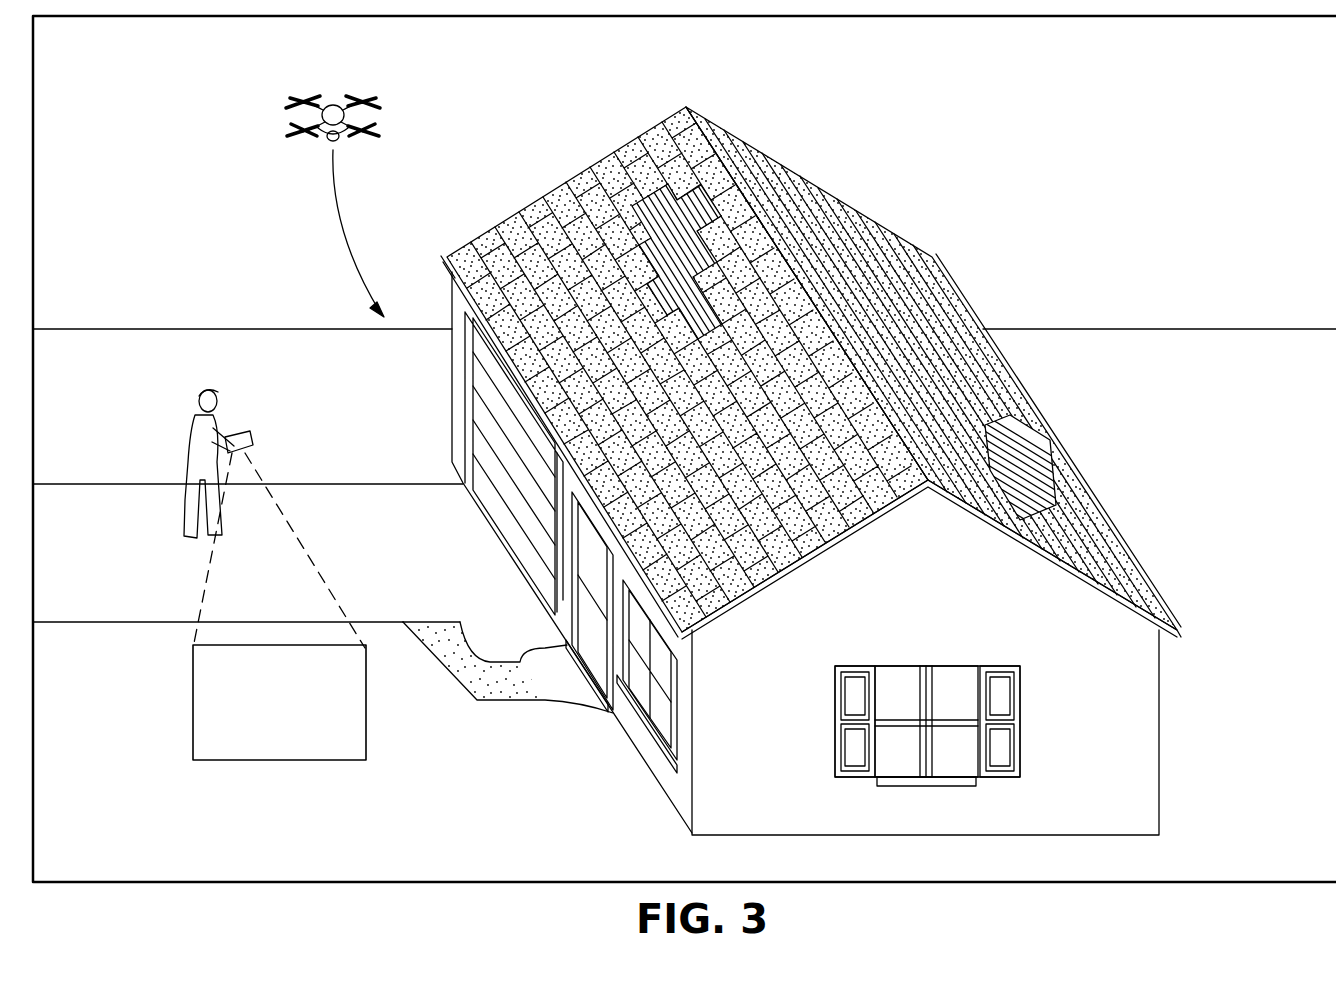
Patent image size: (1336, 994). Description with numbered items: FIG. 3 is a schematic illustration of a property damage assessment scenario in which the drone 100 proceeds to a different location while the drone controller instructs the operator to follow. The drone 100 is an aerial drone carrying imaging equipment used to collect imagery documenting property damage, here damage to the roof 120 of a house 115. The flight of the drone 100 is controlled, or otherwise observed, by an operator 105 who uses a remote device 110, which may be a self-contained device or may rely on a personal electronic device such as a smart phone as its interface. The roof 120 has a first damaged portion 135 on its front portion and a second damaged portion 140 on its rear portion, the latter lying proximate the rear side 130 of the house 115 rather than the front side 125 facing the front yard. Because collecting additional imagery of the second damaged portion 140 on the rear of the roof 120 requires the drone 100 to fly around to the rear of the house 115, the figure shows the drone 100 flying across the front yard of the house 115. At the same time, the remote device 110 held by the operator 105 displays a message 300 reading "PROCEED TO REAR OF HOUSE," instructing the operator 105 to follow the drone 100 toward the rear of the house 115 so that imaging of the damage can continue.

The drone 100 is at (262, 121).
The operator 105 is at (175, 403).
The remote device 110 is at (240, 432).
The house 115 is at (950, 202).
The roof 120 is at (620, 138).
The front side 125 is at (556, 752).
The rear side 130 is at (1208, 758).
The first damaged portion 135 is at (705, 212).
The second damaged portion 140 is at (1056, 438).
The message 300 is at (193, 705).